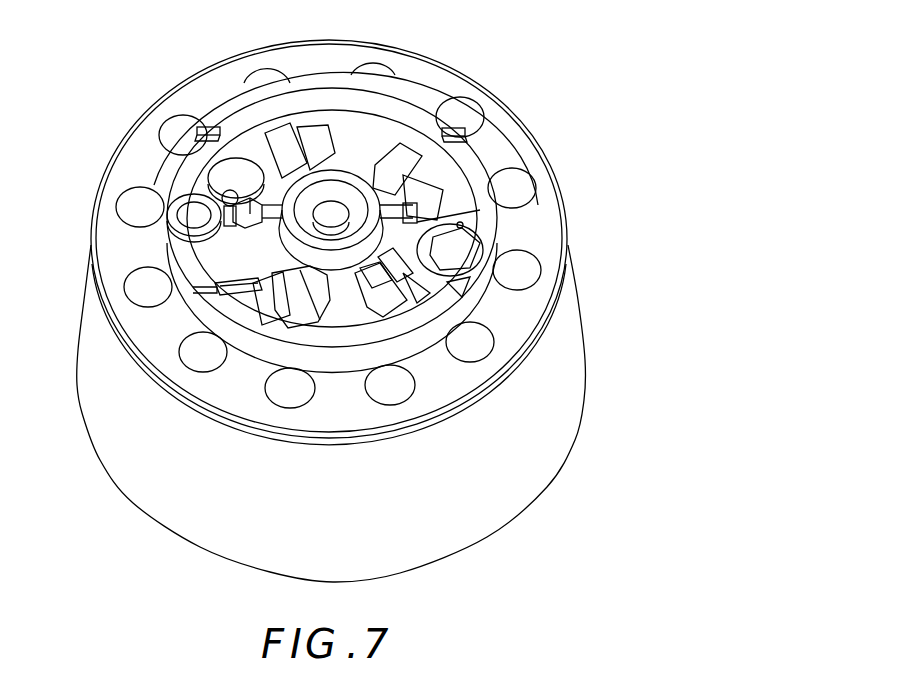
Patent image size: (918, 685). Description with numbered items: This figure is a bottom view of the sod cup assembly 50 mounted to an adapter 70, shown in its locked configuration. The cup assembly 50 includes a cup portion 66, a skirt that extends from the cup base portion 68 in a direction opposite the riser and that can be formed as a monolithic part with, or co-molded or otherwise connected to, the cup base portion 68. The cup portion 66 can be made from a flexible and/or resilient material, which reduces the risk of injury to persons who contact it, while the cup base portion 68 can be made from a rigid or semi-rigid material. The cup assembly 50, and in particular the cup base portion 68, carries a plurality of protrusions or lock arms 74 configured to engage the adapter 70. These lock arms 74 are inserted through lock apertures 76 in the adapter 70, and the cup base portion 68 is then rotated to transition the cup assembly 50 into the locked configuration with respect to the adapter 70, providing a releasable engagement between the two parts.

The cup assembly 50 is at (627, 155).
The cup portion 66 is at (140, 445).
The cup base portion 68 is at (187, 95).
The adapter 70 is at (468, 157).
The lock arms 74 is at (317, 277).
The lock apertures 76 is at (287, 290).